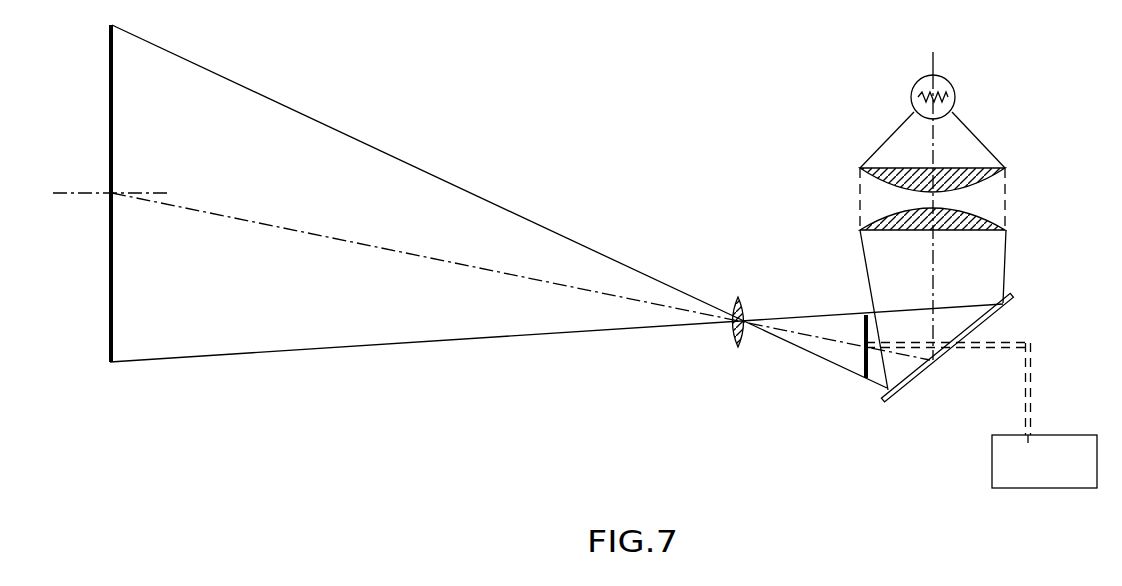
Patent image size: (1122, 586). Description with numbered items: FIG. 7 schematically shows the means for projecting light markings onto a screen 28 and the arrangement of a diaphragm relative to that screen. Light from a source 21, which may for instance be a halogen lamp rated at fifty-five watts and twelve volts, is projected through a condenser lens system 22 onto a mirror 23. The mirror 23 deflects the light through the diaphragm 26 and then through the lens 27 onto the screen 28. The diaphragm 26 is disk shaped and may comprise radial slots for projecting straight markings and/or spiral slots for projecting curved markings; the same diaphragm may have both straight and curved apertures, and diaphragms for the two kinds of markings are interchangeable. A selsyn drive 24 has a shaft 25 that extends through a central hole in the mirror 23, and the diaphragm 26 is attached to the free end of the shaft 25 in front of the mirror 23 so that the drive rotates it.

The light source 21 is at (938, 90).
The condenser lens system 22 is at (983, 168).
The mirror 23 is at (945, 357).
The selsyn drive 24 is at (1053, 488).
The shaft 25 is at (1028, 340).
The diaphragm 26 is at (863, 363).
The lens 27 is at (732, 338).
The screen 28 is at (113, 318).